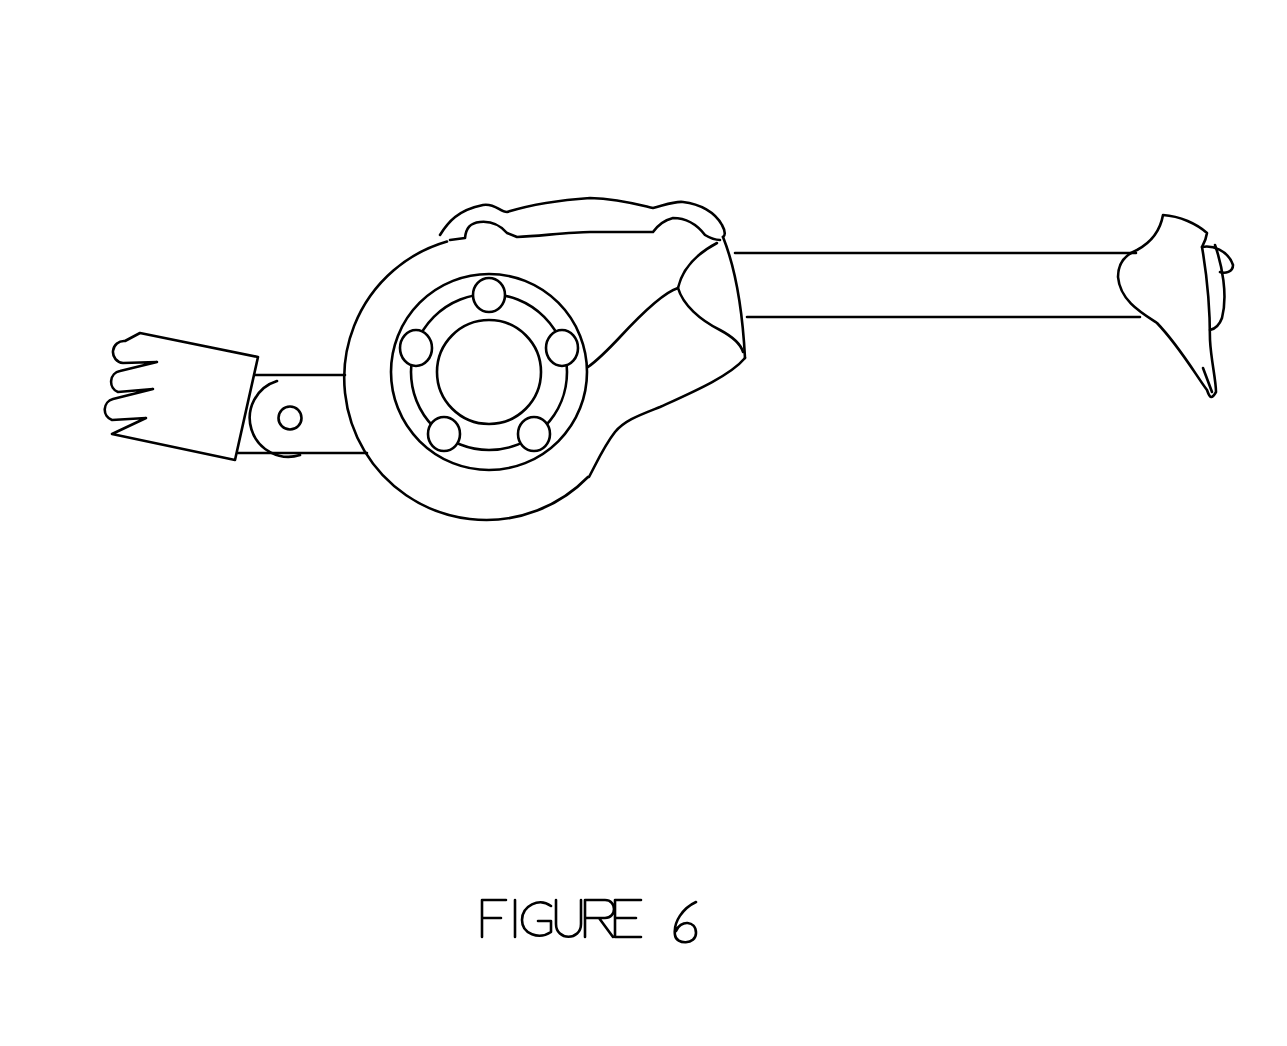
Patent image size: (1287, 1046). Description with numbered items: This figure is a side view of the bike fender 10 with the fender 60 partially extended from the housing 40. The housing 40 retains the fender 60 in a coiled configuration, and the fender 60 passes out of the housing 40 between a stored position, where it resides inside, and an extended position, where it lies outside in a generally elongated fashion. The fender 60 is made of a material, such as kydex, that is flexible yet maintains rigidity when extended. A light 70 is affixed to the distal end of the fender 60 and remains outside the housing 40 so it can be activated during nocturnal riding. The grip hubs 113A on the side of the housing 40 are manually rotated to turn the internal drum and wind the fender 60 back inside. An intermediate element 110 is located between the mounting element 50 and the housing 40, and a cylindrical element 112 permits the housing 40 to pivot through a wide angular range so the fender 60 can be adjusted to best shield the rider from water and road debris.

The bike fender 10 is at (743, 152).
The housing 40 is at (575, 457).
The mounting element 50 is at (145, 337).
The fender 60 is at (885, 300).
The light 70 is at (1214, 396).
The intermediate element 110 is at (315, 442).
The cylindrical element 112 is at (290, 406).
The grip hubs 113A is at (482, 405).